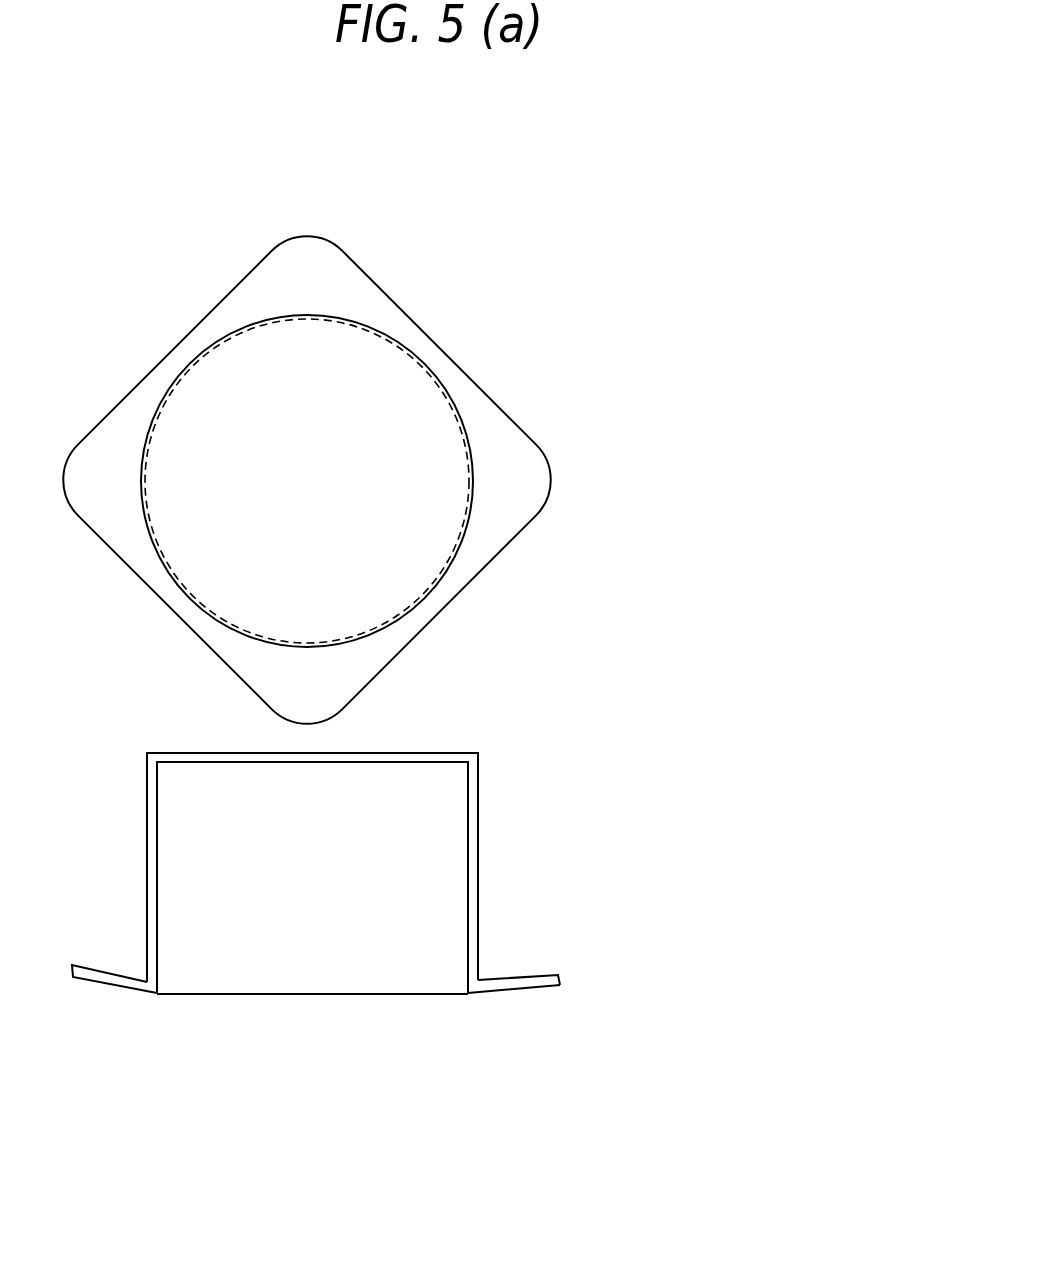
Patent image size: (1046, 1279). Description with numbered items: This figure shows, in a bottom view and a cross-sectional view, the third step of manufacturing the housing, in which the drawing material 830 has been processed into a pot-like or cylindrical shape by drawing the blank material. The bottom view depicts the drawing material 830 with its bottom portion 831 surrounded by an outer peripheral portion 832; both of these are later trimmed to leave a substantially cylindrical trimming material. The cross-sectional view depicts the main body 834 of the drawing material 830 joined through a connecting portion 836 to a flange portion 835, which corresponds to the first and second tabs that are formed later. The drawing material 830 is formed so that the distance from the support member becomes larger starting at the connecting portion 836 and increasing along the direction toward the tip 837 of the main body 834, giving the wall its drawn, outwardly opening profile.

The drawing material 830 is at (512, 472).
The bottom portion 831 is at (407, 745).
The outer peripheral portion 832 is at (397, 293).
The main body 834 is at (478, 873).
The flange portion 835 is at (530, 990).
The connecting portion 836 is at (472, 995).
The tip 837 is at (563, 987).